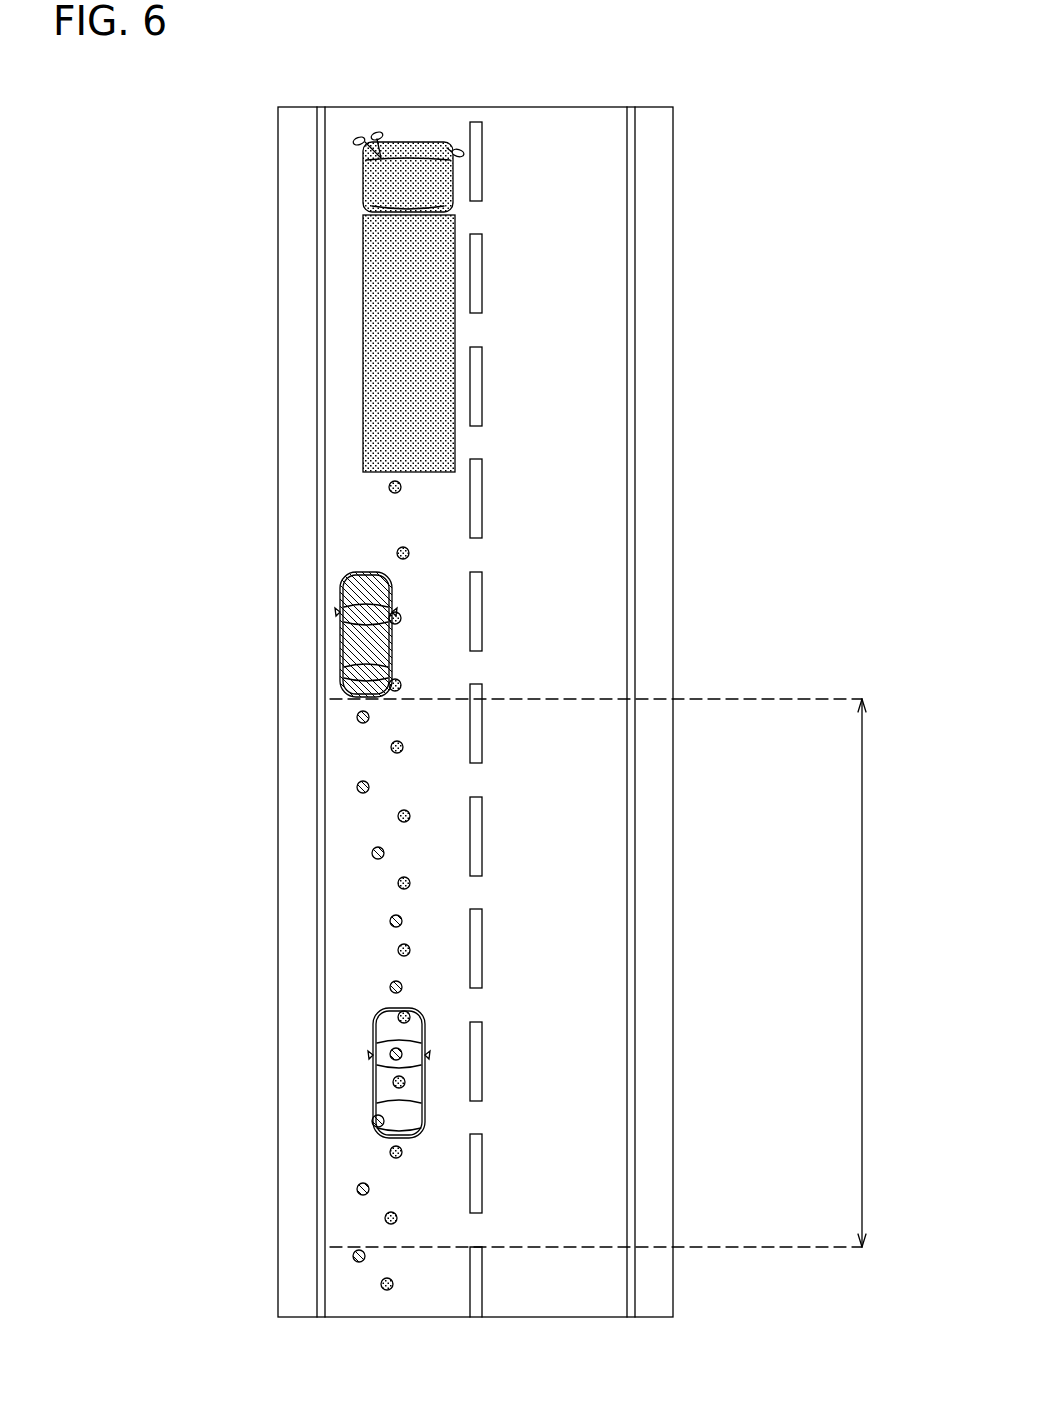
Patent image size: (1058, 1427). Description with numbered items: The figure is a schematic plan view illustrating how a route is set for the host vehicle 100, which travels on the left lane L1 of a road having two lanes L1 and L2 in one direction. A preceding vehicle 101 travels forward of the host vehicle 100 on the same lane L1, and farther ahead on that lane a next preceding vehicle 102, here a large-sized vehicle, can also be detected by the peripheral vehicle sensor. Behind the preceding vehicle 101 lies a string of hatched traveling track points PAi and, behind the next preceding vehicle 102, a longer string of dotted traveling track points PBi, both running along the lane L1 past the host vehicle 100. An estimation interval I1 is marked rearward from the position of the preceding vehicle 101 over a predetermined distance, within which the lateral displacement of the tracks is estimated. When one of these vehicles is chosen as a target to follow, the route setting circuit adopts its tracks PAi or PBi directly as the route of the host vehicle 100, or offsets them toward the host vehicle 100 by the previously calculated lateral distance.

The host vehicle 100 is at (394, 1100).
The preceding vehicle 101 is at (343, 655).
The next preceding vehicle 102 is at (389, 328).
The left lane L1 is at (396, 128).
The right lane L2 is at (557, 128).
The estimation interval I1 is at (613, 973).
The traveling track of the preceding vehicle PAi is at (356, 717).
The traveling track of the next preceding vehicle PBi is at (401, 490).